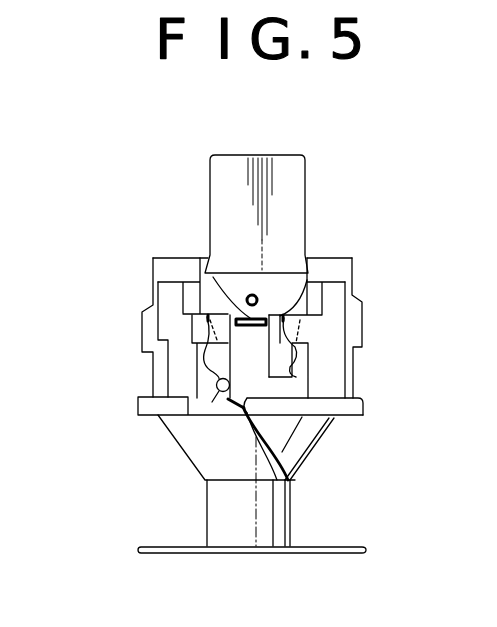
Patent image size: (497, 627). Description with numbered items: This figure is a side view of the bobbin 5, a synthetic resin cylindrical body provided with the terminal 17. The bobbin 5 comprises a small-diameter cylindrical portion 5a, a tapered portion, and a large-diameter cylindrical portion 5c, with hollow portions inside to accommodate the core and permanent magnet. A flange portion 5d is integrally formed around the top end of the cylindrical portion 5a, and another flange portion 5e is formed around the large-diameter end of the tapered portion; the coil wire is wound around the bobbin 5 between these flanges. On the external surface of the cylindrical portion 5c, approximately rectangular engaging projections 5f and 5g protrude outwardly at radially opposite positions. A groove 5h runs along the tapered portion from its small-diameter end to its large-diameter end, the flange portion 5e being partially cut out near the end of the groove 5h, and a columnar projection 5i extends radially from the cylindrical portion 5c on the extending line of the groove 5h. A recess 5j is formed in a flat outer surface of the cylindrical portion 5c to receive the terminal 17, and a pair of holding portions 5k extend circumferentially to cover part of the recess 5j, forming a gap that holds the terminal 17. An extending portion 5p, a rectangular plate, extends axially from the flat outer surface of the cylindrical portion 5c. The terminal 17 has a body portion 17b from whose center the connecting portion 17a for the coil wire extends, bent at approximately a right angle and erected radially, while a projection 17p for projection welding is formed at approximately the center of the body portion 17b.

The bobbin 5 is at (140, 258).
The small-diameter cylindrical portion 5a is at (215, 512).
The large-diameter cylindrical portion 5c is at (150, 382).
The flange portion 5d is at (366, 549).
The flange portion 5e is at (363, 408).
The engaging projection 5f is at (362, 328).
The engaging projection 5g is at (142, 334).
The groove 5h is at (308, 447).
The columnar projection 5i is at (219, 391).
The recess 5j is at (300, 352).
The holding portion 5k is at (183, 300).
The extending portion 5p is at (292, 178).
The terminal 17 is at (240, 273).
The connecting portion 17a is at (207, 273).
The body portion 17b is at (270, 295).
The projection 17p is at (257, 300).